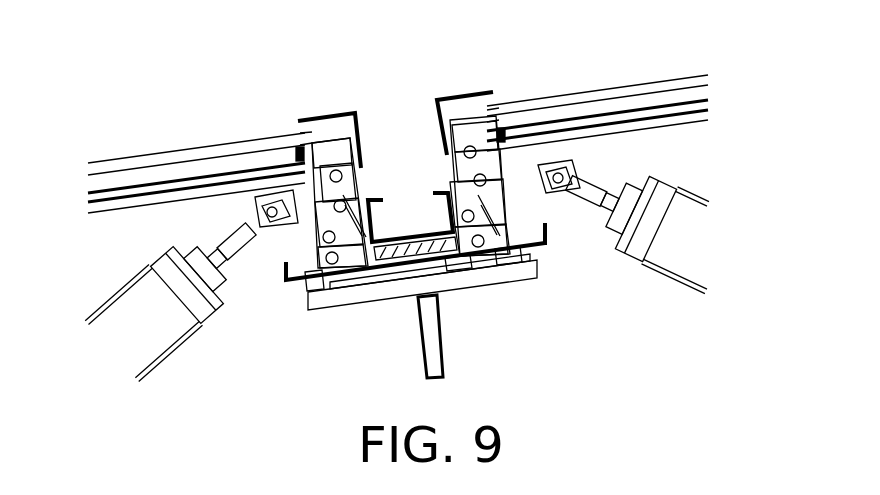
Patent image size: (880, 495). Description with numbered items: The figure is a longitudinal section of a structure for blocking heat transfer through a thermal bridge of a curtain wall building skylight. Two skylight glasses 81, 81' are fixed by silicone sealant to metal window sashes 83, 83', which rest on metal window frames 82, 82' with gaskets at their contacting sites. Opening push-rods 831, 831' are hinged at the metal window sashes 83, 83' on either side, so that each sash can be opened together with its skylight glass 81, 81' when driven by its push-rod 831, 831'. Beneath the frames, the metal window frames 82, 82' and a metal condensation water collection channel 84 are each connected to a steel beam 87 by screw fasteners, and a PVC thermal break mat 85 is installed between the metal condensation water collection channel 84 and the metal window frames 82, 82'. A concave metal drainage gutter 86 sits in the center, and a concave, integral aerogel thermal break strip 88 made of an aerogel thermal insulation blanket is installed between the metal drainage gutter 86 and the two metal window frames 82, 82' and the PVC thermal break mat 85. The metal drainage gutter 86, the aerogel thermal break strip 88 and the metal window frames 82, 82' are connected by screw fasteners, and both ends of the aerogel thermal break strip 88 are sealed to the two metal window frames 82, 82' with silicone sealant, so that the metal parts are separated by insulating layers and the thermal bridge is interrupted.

The skylight glass 81 is at (196, 140).
The skylight glass 81' is at (597, 90).
The metal window sash 83 is at (310, 164).
The metal window sash 83' is at (547, 134).
The opening push-rod 831 is at (172, 286).
The opening push-rod 831' is at (671, 233).
The metal condensation water collection channel 84 is at (290, 287).
The metal window frame 82 is at (414, 319).
The metal window frame 82' is at (609, 278).
The PVC thermal break mat 85 is at (372, 291).
The metal drainage gutter 86 is at (492, 264).
The steel beam 87 is at (437, 294).
The aerogel thermal break strip 88 is at (448, 258).